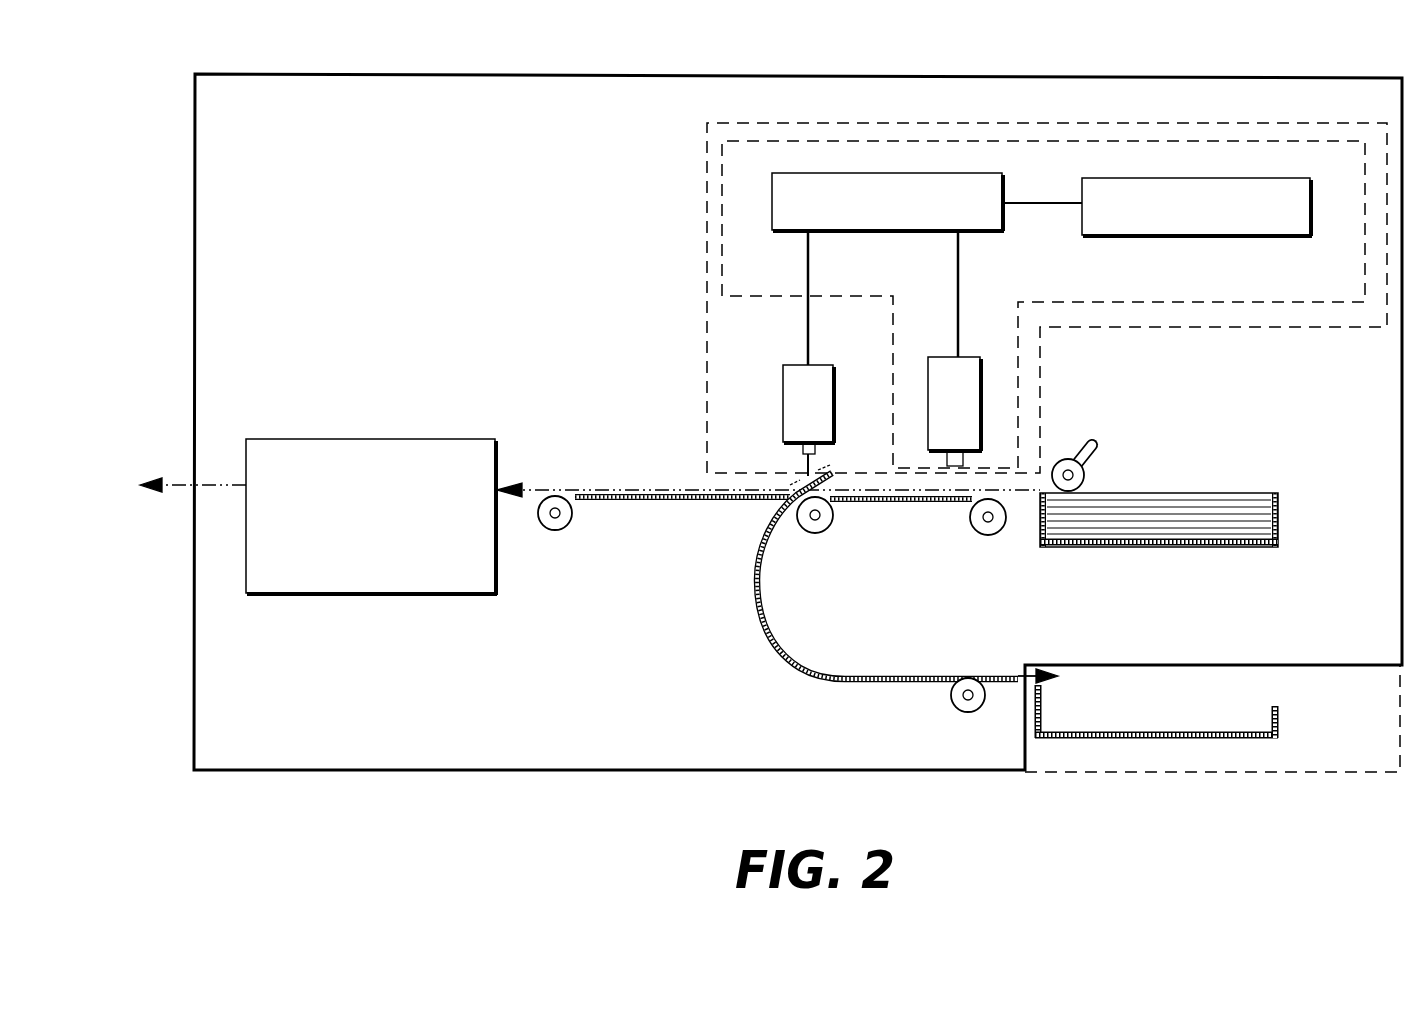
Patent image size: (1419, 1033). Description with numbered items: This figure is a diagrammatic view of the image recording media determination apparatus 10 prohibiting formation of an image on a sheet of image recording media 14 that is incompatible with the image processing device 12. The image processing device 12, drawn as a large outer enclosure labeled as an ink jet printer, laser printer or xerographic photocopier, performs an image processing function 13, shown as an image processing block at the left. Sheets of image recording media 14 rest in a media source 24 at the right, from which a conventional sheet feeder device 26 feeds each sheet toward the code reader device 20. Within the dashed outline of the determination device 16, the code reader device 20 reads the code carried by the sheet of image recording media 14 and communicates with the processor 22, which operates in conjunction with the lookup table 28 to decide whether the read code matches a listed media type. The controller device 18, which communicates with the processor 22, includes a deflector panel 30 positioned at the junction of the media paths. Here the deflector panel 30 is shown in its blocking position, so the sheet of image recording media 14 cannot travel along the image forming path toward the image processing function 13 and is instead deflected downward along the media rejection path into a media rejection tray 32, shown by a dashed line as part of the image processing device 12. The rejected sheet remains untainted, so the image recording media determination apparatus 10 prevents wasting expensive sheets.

The image recording media determination apparatus 10 is at (1192, 341).
The image processing device 12 is at (592, 76).
The image processing function 13 is at (413, 439).
The sheet of image recording media 14 is at (1195, 493).
The determination device 16 is at (1215, 302).
The controller device 18 is at (786, 363).
The code reader device 20 is at (940, 360).
The processor 22 is at (985, 222).
The media source 24 is at (1180, 540).
The sheet feeder device 26 is at (1095, 441).
The lookup table 28 is at (1120, 229).
The deflector panel 30 is at (793, 478).
The media rejection tray 32 is at (1280, 720).